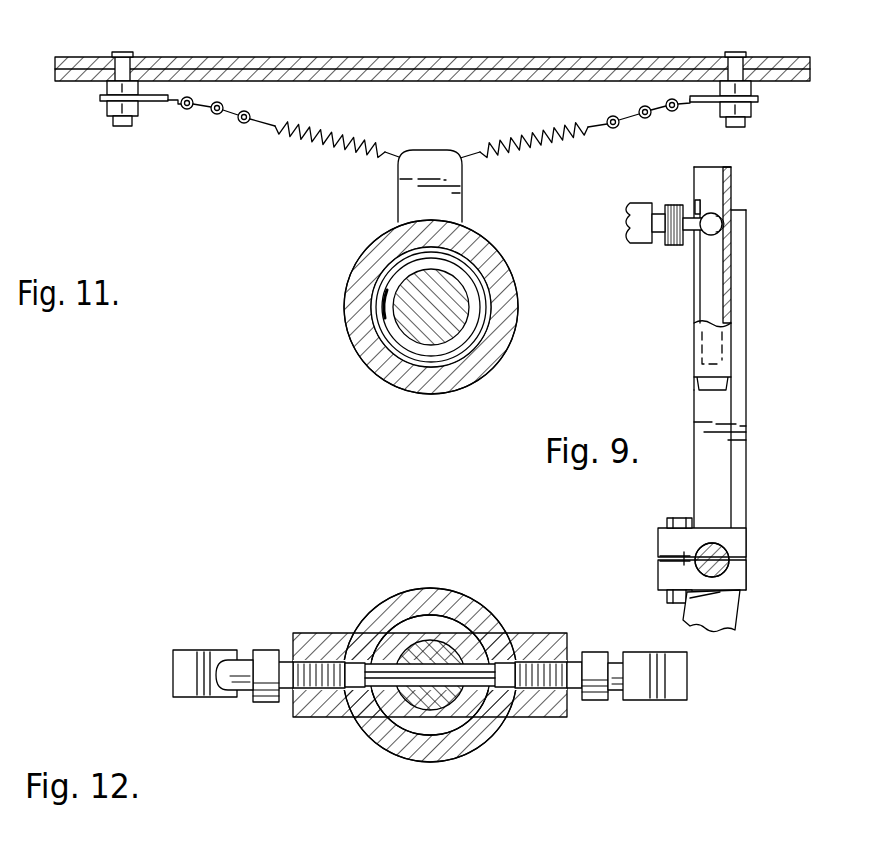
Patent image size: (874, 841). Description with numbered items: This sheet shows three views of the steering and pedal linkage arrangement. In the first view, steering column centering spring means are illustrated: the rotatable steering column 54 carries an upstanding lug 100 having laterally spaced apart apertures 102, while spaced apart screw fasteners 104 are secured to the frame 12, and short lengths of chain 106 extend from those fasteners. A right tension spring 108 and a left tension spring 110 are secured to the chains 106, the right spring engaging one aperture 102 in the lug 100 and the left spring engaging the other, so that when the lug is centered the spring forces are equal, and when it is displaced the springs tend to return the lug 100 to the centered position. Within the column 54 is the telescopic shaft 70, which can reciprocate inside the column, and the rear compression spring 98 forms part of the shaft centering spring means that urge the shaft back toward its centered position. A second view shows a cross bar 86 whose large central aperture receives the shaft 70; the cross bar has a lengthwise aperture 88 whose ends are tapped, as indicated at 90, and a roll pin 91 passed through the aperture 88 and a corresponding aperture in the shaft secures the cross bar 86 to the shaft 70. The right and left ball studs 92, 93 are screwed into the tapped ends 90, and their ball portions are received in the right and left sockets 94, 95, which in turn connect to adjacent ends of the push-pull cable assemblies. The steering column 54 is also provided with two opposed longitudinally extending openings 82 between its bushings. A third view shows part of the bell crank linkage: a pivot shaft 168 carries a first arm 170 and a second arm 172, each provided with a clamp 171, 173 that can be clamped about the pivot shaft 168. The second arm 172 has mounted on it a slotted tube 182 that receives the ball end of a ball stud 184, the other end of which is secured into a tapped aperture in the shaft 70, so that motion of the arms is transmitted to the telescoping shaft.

In FIG. 11, the frame 12 is at (348, 57).
In FIG. 11, the rotatable steering column 54 is at (360, 350).
In FIG. 11, the shaft 70 is at (421, 335).
In FIG. 9, the shaft 70 is at (642, 248).
In FIG. 12, the shaft 70 is at (447, 645).
In FIG. 12, the longitudinally extending openings 82 is at (443, 763).
In FIG. 12, the cross bar 86 is at (537, 633).
In FIG. 12, the aperture 88 is at (345, 718).
In FIG. 12, the tapped ends 90 is at (320, 633).
In FIG. 12, the roll pin 91 is at (388, 635).
In FIG. 12, the right ball stud 92 is at (612, 700).
In FIG. 12, the left ball stud 93 is at (250, 650).
In FIG. 12, the right socket 94 is at (663, 700).
In FIG. 12, the left socket 95 is at (190, 650).
In FIG. 11, the rear compression spring 98 is at (486, 320).
In FIG. 11, the upstanding lug 100 is at (452, 198).
In FIG. 11, the apertures 102 is at (441, 155).
In FIG. 11, the screw fasteners 104 is at (112, 115).
In FIG. 11, the short lengths of chain 106 is at (228, 118).
In FIG. 11, the right tension spring 108 is at (538, 150).
In FIG. 11, the left tension spring 110 is at (320, 148).
In FIG. 9, the pivot shaft 168 is at (718, 563).
In FIG. 9, the first arm 170 is at (730, 618).
In FIG. 9, the clamp 171 is at (672, 558).
In FIG. 9, the second arm 172 is at (735, 460).
In FIG. 9, the clamp 173 is at (718, 535).
In FIG. 9, the slotted tube 182 is at (720, 347).
In FIG. 9, the ball stud 184 is at (690, 245).